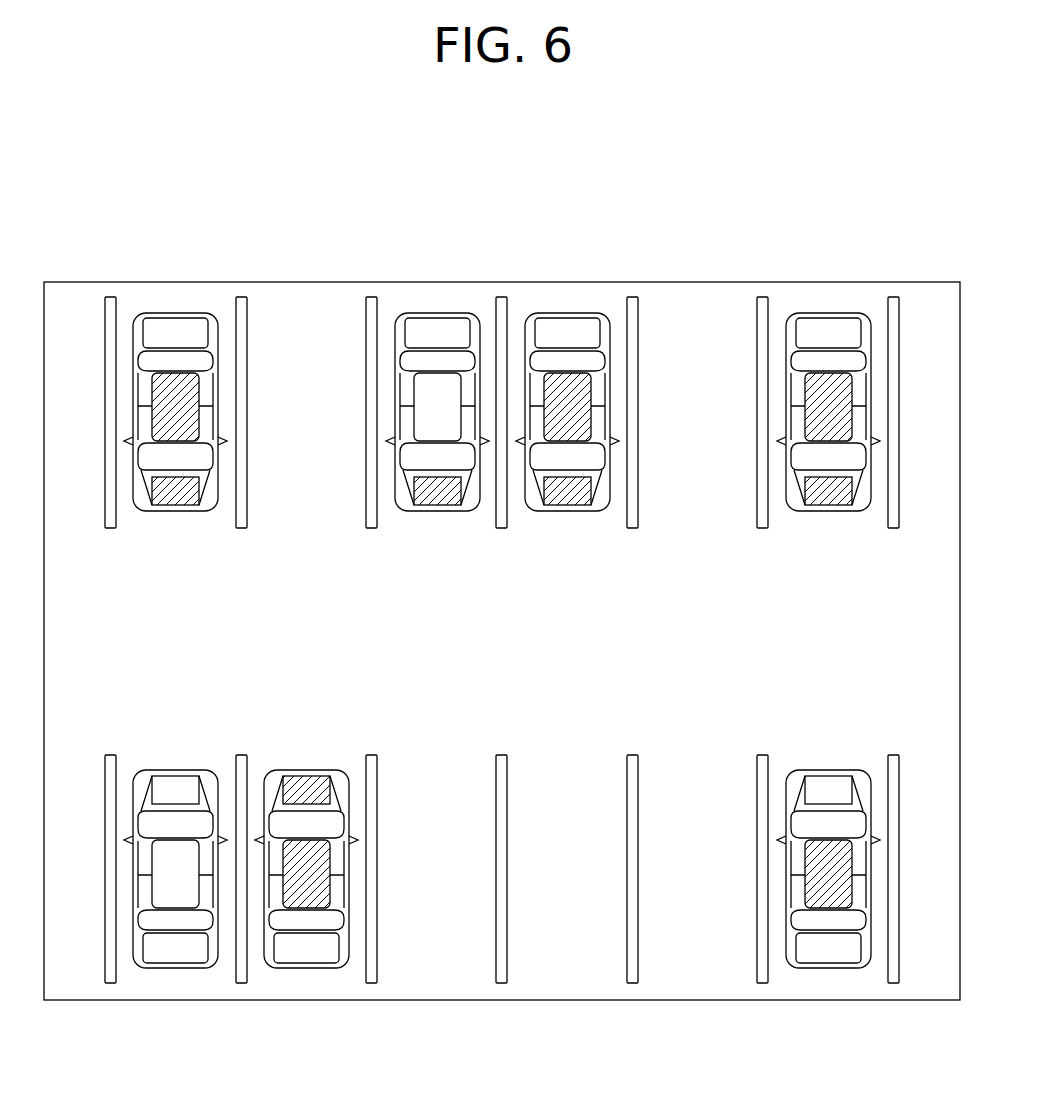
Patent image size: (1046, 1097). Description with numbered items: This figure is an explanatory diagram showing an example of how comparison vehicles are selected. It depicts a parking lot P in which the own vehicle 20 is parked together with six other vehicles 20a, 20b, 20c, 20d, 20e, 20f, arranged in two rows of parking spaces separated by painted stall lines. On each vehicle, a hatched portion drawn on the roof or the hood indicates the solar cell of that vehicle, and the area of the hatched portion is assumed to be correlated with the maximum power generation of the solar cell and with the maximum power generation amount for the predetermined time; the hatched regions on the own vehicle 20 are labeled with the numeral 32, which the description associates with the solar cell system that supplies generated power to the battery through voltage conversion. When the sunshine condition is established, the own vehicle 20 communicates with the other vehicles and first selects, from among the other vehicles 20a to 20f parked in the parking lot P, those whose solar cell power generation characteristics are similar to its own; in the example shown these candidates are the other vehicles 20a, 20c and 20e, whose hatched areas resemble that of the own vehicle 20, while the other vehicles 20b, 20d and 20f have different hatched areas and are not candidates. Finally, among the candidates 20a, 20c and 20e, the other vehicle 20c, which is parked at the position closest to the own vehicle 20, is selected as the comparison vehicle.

The parking lot P is at (307, 281).
The own vehicle 20 is at (603, 375).
The other vehicle 20a is at (182, 288).
The other vehicle 20b is at (443, 288).
The other vehicle 20c is at (835, 288).
The other vehicle 20d is at (182, 994).
The other vehicle 20e is at (306, 992).
The other vehicle 20f is at (835, 994).
The converter 32 is at (593, 478).